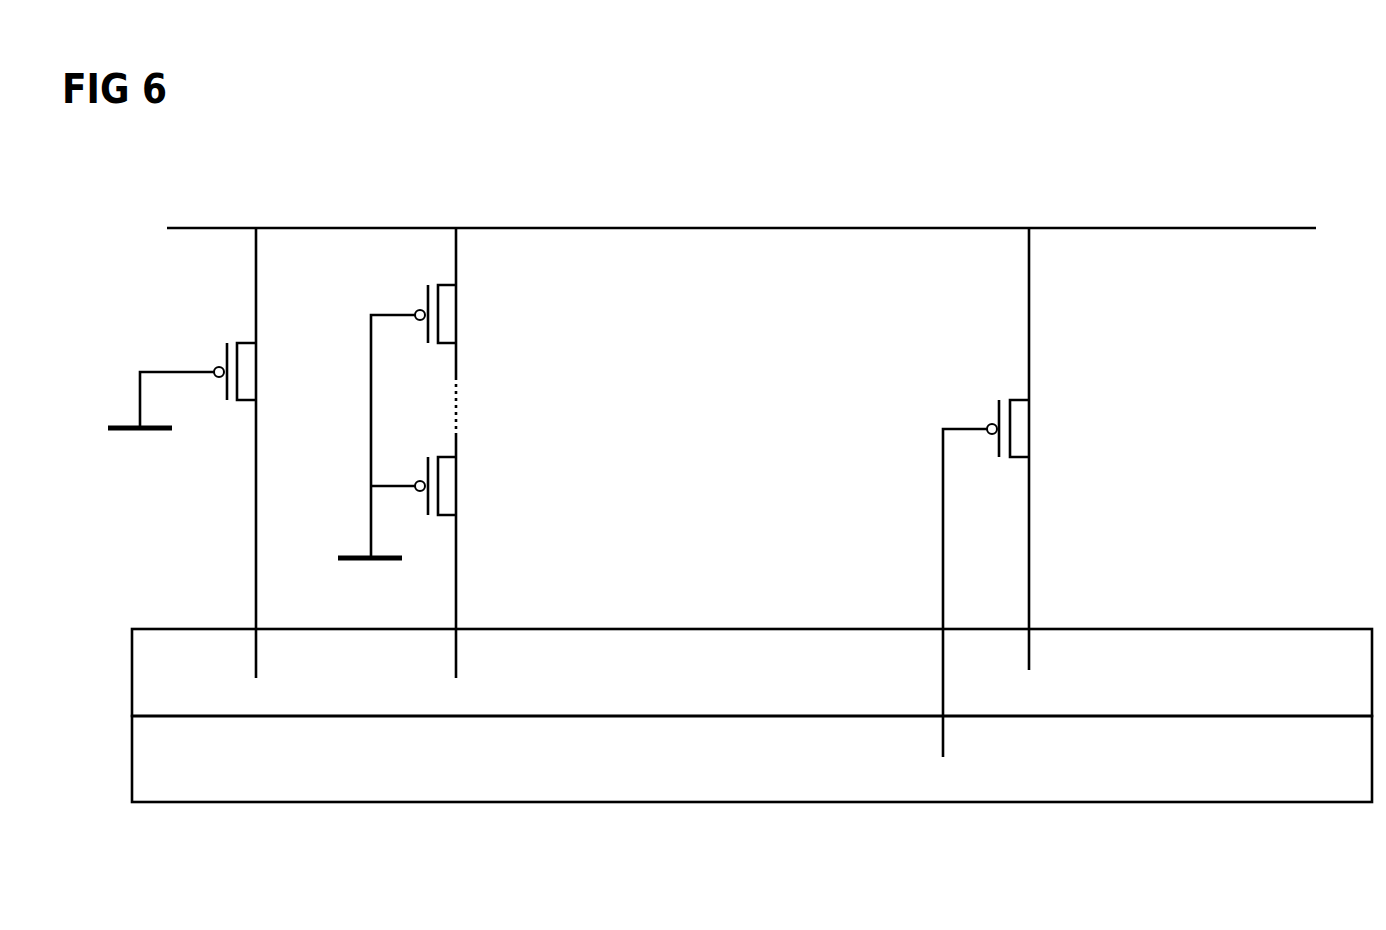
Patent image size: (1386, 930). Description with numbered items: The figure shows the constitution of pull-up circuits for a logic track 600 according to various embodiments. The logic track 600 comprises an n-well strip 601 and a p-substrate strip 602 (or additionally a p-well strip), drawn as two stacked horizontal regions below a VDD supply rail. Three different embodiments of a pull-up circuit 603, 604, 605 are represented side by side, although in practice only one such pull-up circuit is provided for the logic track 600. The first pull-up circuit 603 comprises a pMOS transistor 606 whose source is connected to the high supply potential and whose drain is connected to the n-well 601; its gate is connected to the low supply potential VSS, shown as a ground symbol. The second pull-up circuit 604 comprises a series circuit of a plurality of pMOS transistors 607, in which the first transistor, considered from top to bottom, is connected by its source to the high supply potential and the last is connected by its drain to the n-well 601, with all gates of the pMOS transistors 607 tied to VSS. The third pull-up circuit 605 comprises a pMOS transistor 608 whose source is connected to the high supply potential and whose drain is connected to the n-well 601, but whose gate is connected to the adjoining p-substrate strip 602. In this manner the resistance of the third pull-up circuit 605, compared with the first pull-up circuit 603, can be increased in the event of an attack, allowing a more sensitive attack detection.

The logic track 600 is at (1269, 120).
The n-well strip 601 is at (1188, 642).
The p-substrate strip 602 is at (1200, 788).
The first pull-up circuit 603 is at (258, 170).
The second pull-up circuit 604 is at (453, 167).
The third pull-up circuit 605 is at (1028, 165).
The pMOS transistor 606 is at (230, 325).
The pMOS transistors 607 is at (425, 277).
The pMOS transistor 608 is at (1008, 387).